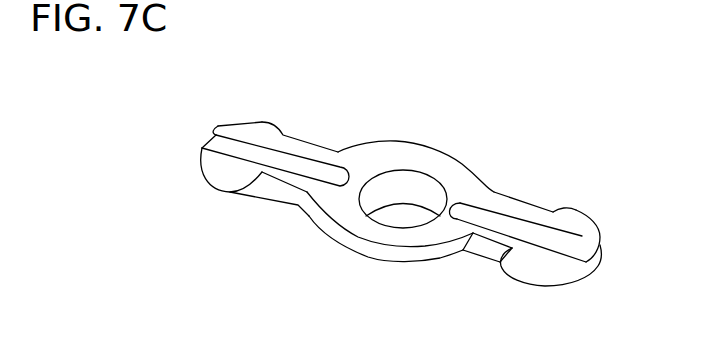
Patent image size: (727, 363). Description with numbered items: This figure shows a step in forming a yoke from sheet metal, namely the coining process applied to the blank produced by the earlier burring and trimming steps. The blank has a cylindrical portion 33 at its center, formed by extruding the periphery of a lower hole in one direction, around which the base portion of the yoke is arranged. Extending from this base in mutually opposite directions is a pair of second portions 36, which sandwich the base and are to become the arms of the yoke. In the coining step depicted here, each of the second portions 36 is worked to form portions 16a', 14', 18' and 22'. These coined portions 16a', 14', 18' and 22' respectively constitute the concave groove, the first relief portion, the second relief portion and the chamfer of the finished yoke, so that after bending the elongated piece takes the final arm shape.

The portion to form the first relief portion 14' is at (401, 202).
The portion to form the concave groove 16a' is at (421, 170).
The portion to form the second relief portion 18' is at (394, 196).
The portion to form the chamfer 22' is at (390, 252).
The cylindrical portion 33 is at (417, 188).
The second portions 36 is at (233, 131).